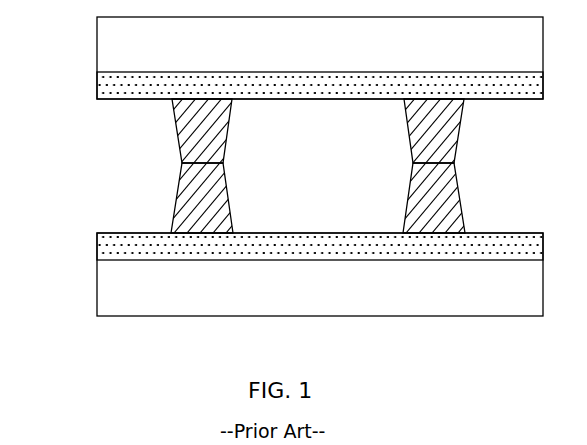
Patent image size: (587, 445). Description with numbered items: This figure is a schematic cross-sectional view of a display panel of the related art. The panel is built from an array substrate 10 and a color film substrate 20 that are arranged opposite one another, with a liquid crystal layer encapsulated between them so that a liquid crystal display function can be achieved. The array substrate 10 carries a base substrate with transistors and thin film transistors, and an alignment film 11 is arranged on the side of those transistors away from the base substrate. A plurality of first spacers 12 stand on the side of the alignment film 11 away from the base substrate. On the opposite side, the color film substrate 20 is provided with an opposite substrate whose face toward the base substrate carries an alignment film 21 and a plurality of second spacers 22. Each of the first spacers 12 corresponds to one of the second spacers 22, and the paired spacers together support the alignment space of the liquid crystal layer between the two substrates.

The array substrate 10 is at (85, 233).
The alignment film 11 is at (110, 248).
The first spacers 12 is at (190, 196).
The color film substrate 20 is at (85, 15).
The alignment film 21 is at (112, 87).
The second spacers 22 is at (202, 126).